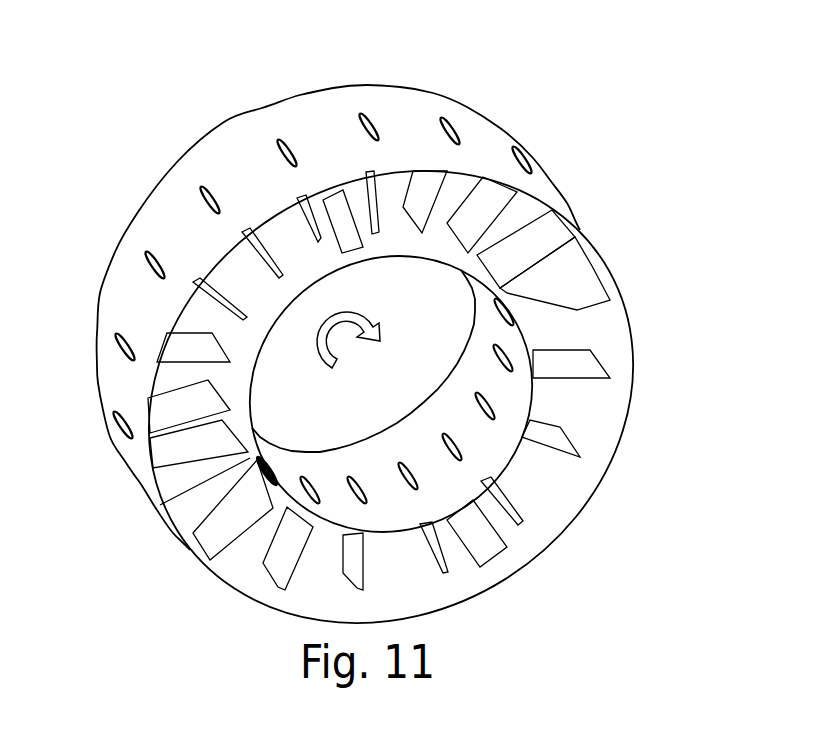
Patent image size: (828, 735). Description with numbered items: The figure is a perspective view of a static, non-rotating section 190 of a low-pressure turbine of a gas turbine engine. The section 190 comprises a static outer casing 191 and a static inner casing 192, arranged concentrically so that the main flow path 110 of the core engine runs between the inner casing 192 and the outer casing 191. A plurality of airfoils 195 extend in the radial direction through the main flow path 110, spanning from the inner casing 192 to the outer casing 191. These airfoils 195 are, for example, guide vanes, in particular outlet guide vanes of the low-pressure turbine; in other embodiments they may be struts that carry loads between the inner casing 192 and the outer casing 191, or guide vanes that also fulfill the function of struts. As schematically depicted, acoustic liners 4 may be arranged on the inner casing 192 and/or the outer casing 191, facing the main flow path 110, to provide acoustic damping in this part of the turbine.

The static section 190 is at (514, 100).
The static outer casing 191 is at (327, 128).
The static inner casing 192 is at (388, 240).
The main flow path 110 is at (556, 260).
The airfoils 195 is at (187, 350).
The acoustic liner 4 is at (343, 215).